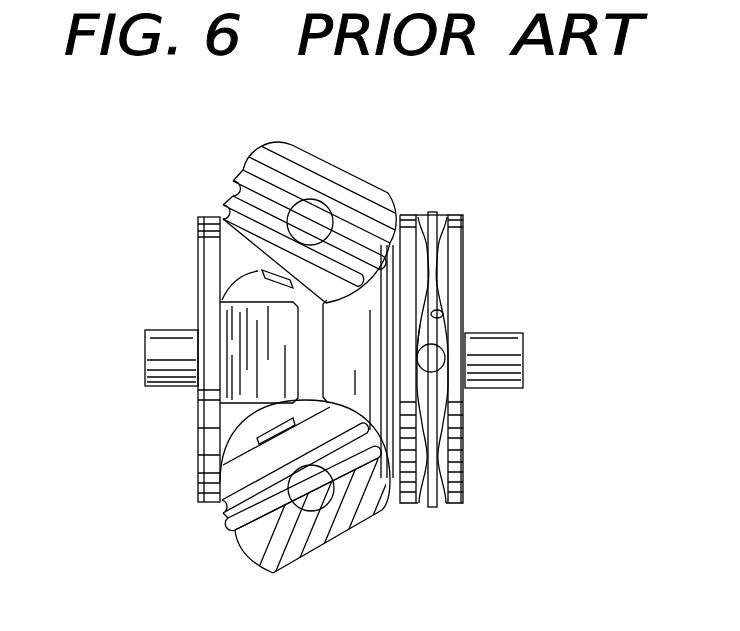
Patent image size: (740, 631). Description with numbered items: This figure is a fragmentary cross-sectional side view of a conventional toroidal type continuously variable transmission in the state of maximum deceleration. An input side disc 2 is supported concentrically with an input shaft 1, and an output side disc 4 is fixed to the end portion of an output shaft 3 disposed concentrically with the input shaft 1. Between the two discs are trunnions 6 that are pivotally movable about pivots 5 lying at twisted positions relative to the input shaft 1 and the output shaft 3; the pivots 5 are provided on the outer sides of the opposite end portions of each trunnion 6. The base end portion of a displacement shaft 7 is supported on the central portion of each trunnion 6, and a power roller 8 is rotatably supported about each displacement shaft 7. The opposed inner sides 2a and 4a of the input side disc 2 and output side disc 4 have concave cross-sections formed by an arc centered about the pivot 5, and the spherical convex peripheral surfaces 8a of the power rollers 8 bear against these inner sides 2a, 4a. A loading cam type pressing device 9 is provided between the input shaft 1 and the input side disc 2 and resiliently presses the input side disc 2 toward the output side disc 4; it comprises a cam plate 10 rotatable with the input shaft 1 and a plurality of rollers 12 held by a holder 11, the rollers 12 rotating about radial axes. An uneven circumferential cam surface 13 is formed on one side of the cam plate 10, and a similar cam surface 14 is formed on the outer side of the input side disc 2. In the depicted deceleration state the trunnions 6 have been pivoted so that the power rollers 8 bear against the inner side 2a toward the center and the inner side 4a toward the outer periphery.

The input shaft 1 is at (513, 355).
The input side disc 2 is at (463, 236).
The inner side of the input side disc 2a is at (382, 512).
The output shaft 3 is at (157, 351).
The output side disc 4 is at (207, 284).
The inner side of the output side disc 4a is at (222, 303).
The pivot 5 is at (322, 202).
The trunnion 6 is at (273, 162).
The displacement shaft 7 is at (258, 271).
The power roller 8 is at (224, 212).
The peripheral surface of the power roller 8a is at (235, 222).
The loading cam type pressing device 9 is at (451, 193).
The cam plate 10 is at (457, 256).
The holder 11 is at (433, 212).
The roller 12 is at (420, 215).
The cam surface 13 is at (440, 312).
The cam surface 14 is at (420, 380).